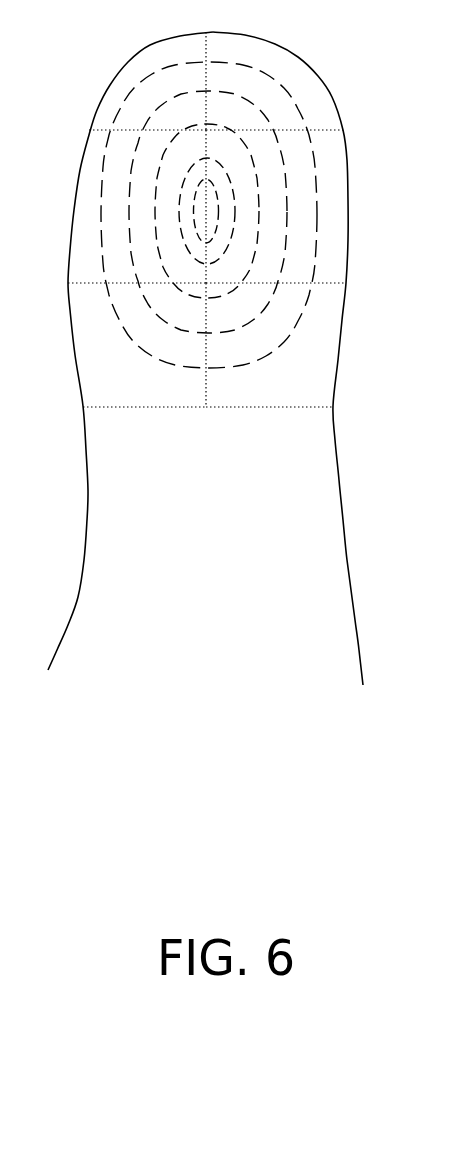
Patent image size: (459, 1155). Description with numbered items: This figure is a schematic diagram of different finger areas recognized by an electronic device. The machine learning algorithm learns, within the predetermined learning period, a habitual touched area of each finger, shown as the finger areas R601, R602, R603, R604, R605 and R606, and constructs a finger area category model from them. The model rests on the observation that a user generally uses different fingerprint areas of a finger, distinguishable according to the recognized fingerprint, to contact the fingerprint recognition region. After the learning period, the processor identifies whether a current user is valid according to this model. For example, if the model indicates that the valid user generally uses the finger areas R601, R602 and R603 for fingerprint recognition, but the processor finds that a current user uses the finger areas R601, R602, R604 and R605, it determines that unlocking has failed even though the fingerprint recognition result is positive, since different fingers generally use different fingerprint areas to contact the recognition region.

The finger area R601 is at (147, 81).
The finger area R602 is at (137, 206).
The finger area R603 is at (144, 345).
The finger area R604 is at (274, 103).
The finger area R605 is at (276, 242).
The finger area R606 is at (269, 364).